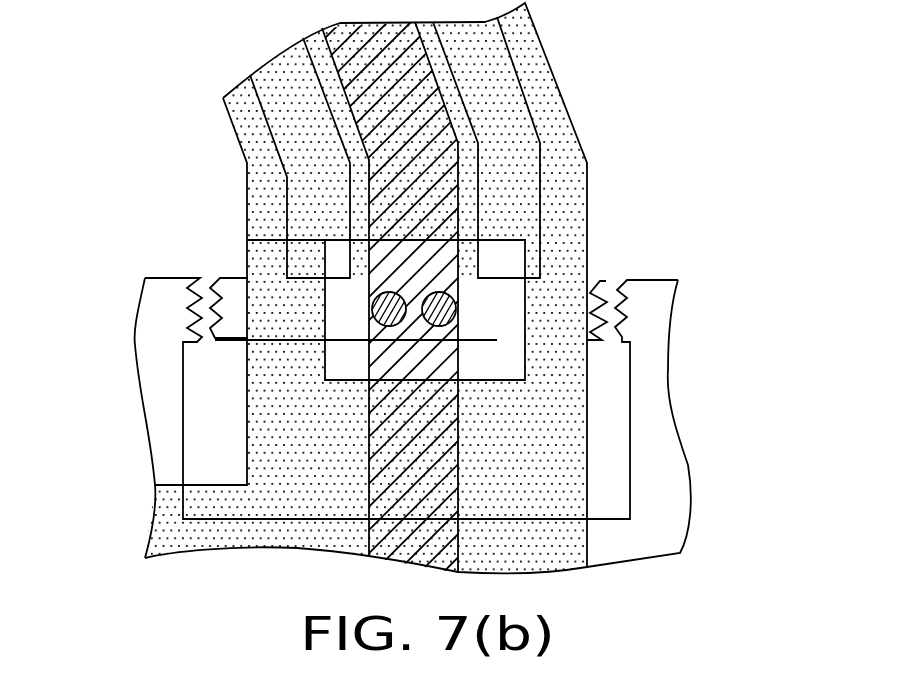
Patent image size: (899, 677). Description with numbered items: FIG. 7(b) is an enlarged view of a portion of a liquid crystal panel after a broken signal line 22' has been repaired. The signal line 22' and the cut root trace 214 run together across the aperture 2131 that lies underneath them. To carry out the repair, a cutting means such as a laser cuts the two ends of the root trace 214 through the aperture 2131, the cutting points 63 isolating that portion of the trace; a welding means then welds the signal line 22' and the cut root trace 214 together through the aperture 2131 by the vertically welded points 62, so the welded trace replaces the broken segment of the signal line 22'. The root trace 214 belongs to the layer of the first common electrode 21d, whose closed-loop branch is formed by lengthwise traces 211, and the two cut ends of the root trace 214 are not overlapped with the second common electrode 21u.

The signal line 22' is at (252, 288).
The lengthwise trace 211 is at (288, 80).
The welding point 62 is at (261, 268).
The cutting point 63 is at (410, 308).
The root trace 214 is at (689, 242).
The aperture 2131 is at (493, 363).
The first common electrode 21d is at (652, 453).
The second common electrode 21u is at (548, 492).